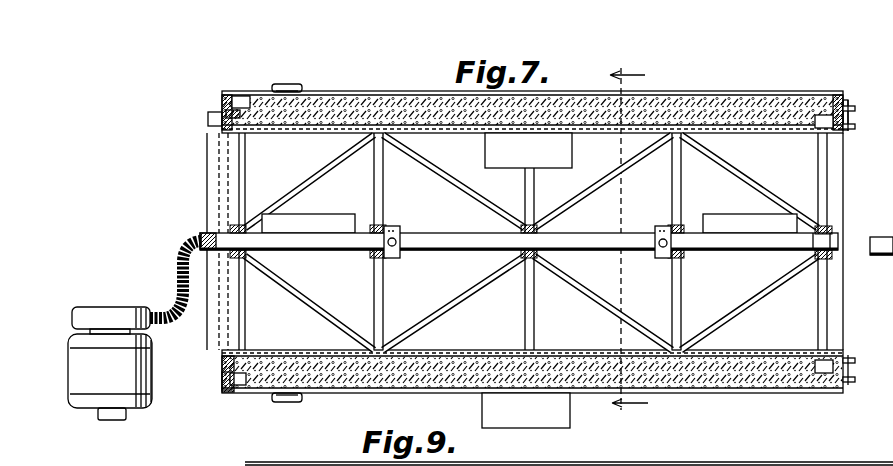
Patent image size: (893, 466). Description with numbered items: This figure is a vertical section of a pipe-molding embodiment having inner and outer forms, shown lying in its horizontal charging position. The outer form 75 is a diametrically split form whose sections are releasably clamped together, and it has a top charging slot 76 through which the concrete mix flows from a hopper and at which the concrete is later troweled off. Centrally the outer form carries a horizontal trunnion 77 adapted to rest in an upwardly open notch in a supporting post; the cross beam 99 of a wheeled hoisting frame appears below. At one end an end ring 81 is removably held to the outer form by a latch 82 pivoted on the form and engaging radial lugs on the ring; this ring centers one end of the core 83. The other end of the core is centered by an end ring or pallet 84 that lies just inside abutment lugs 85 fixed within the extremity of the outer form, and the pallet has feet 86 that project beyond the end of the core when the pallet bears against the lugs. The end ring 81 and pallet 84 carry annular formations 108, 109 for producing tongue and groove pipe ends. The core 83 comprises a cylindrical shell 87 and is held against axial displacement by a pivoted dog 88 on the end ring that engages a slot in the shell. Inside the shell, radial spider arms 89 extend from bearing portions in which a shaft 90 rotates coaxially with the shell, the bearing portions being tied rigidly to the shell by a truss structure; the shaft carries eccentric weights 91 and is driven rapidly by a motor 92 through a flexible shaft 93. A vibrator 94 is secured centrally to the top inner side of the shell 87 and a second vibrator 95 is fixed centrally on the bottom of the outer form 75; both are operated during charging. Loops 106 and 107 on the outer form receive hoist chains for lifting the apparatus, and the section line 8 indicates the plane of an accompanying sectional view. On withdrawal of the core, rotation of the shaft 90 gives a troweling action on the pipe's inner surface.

The section line 8- 8 is at (629, 243).
The outer form 75 is at (713, 395).
The top charging slot 76 is at (688, 97).
The horizontal trunnion 77 is at (872, 262).
The end ring 81 is at (222, 377).
The latch 82 is at (238, 96).
The core 83 is at (362, 122).
The end ring or pallet 84 is at (822, 95).
The abutment lug 85 is at (850, 105).
The foot 86 is at (856, 108).
The cylindrical shell 87 is at (757, 137).
The pivoted dog 88 is at (210, 118).
The radial spider arm 89 is at (238, 195).
The shaft 90 is at (437, 244).
The eccentric weight 91 is at (322, 231).
The motor 92 is at (120, 376).
The flexible shaft 93 is at (173, 276).
The vibrator 94 is at (525, 150).
The vibrator 95 is at (558, 418).
The cross beam 99 is at (676, 462).
The loop 106 is at (303, 84).
The loop 107 is at (284, 402).
The annular formation 108 is at (222, 100).
The annular formation 109 is at (838, 132).